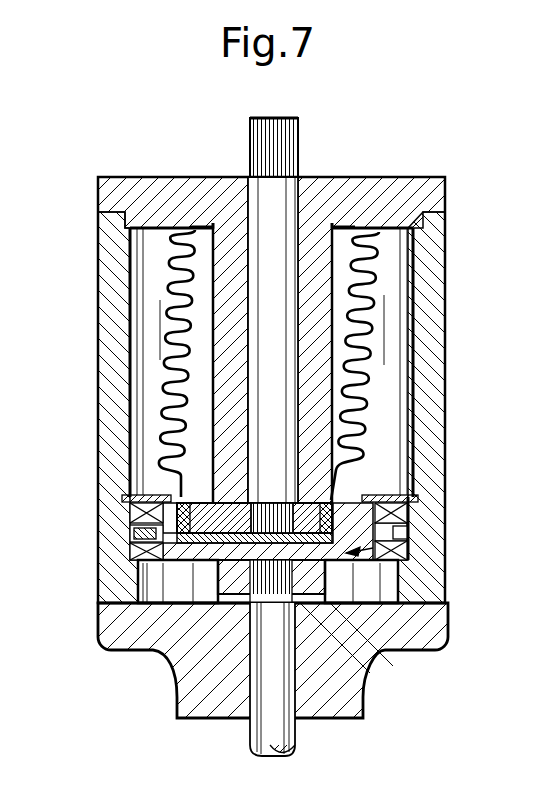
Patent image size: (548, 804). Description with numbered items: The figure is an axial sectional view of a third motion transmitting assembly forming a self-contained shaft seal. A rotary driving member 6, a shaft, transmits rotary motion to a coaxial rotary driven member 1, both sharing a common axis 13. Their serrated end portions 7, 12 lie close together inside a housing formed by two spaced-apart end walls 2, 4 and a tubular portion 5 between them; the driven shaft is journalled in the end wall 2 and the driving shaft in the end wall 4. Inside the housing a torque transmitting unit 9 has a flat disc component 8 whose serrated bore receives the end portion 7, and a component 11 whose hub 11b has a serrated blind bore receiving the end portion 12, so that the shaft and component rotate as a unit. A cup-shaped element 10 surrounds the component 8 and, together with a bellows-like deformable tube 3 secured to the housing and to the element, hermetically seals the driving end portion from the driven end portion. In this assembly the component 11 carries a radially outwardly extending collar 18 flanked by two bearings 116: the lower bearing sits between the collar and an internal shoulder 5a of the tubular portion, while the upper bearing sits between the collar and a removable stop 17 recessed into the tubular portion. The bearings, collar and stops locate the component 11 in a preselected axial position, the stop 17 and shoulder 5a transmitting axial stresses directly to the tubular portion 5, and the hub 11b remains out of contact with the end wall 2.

The rotary driven member 1 is at (298, 737).
The end wall 2 is at (392, 645).
The deformable tube 3 is at (378, 288).
The end wall 4 is at (358, 195).
The tubular portion 5 is at (432, 338).
The internal shoulder 5a is at (398, 578).
The rotary driving member 6 is at (263, 203).
The end portion 7 is at (282, 513).
The component 8 is at (215, 512).
The torque transmitting unit 9 is at (115, 652).
The cup-shaped element 10 is at (380, 516).
The component 11 is at (407, 553).
The hub 11b is at (171, 572).
The end portion 12 is at (290, 585).
The common axis 13 is at (275, 118).
The stop 17 is at (130, 492).
The collar 18 is at (130, 533).
The bearings 116 is at (130, 515).